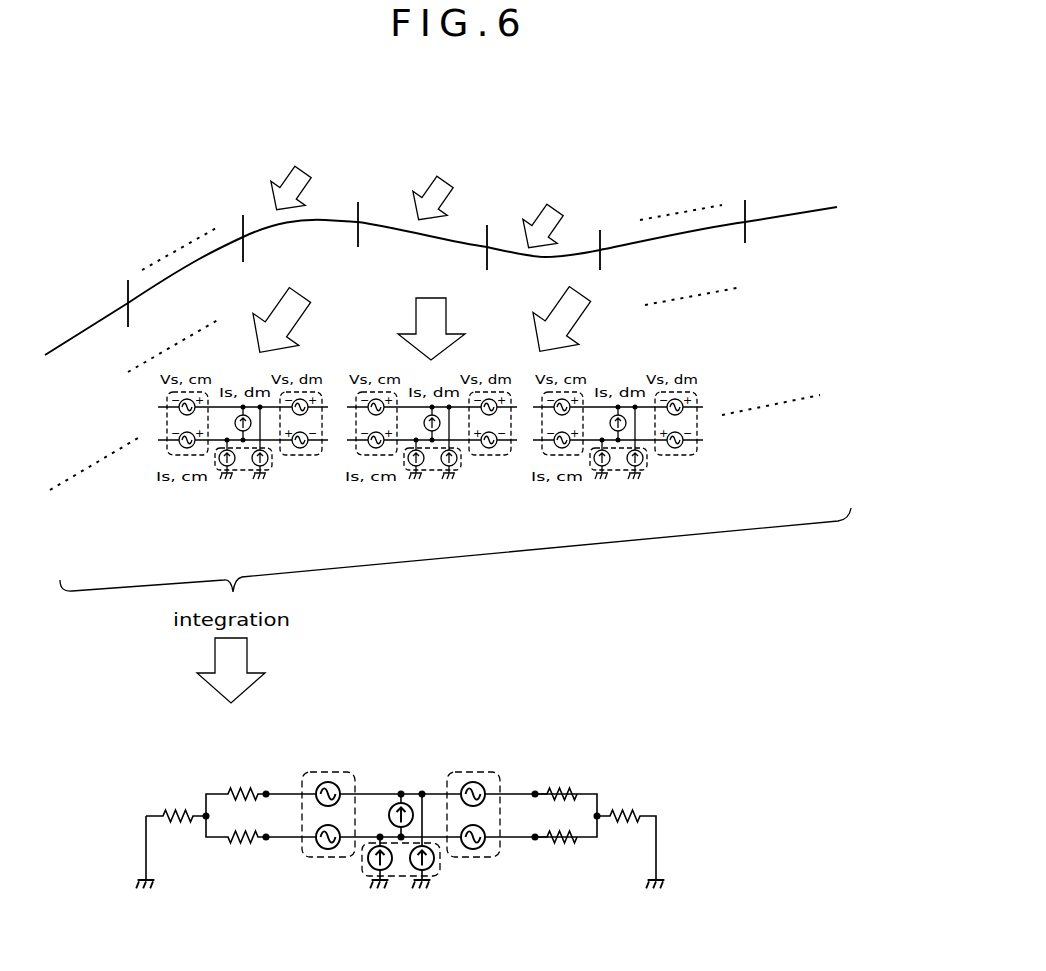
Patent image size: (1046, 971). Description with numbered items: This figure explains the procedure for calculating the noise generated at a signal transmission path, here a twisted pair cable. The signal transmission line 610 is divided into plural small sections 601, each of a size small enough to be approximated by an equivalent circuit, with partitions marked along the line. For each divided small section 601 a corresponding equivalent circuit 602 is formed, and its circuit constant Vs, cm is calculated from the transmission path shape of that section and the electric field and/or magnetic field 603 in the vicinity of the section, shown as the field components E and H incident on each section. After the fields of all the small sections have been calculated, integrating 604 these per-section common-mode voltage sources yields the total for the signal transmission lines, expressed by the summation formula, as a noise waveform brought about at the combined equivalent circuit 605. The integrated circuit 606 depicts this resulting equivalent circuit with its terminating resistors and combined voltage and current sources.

The small section 601 is at (258, 209).
The equivalent circuit 602 is at (624, 373).
The electric field and/or magnetic field 603 is at (288, 128).
The integrating 604 is at (705, 507).
The equivalent circuit 605 is at (645, 614).
The integrated equivalent circuit 606 is at (641, 737).
The signal transmission line 610 is at (787, 207).